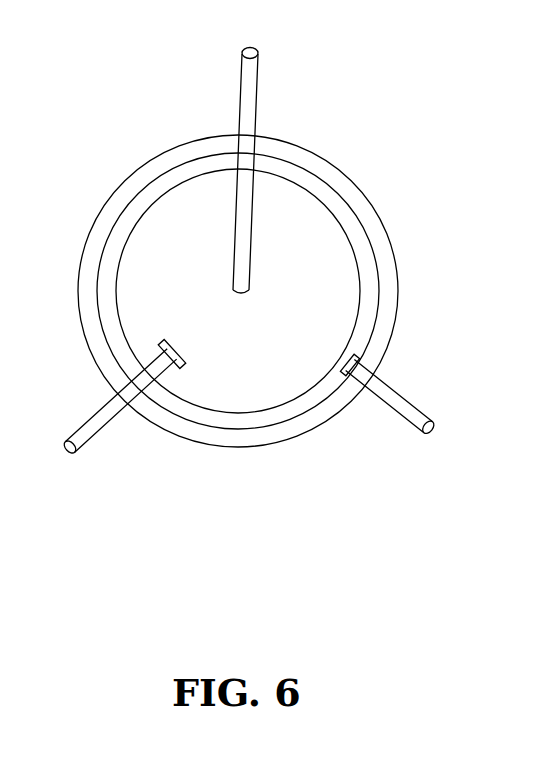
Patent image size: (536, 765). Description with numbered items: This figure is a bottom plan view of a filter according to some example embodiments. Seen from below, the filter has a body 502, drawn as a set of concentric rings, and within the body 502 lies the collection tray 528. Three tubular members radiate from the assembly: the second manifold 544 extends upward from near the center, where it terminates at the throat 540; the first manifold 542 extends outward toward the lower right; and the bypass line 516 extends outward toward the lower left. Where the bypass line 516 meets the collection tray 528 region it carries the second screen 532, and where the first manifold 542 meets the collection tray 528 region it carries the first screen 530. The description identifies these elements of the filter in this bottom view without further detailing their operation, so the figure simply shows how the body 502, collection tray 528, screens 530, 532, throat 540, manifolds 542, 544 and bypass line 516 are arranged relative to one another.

The body 502 is at (315, 165).
The collection tray 528 is at (355, 238).
The second manifold 544 is at (265, 63).
The throat 540 is at (237, 294).
The bypass line 516 is at (105, 432).
The second screen 532 is at (175, 340).
The first manifold 542 is at (427, 413).
The first screen 530 is at (345, 363).